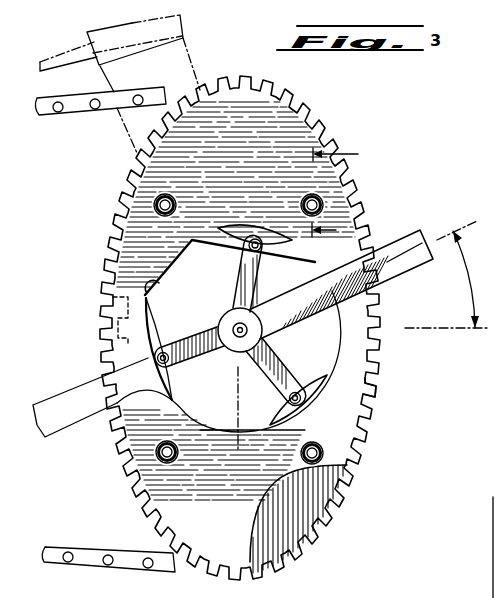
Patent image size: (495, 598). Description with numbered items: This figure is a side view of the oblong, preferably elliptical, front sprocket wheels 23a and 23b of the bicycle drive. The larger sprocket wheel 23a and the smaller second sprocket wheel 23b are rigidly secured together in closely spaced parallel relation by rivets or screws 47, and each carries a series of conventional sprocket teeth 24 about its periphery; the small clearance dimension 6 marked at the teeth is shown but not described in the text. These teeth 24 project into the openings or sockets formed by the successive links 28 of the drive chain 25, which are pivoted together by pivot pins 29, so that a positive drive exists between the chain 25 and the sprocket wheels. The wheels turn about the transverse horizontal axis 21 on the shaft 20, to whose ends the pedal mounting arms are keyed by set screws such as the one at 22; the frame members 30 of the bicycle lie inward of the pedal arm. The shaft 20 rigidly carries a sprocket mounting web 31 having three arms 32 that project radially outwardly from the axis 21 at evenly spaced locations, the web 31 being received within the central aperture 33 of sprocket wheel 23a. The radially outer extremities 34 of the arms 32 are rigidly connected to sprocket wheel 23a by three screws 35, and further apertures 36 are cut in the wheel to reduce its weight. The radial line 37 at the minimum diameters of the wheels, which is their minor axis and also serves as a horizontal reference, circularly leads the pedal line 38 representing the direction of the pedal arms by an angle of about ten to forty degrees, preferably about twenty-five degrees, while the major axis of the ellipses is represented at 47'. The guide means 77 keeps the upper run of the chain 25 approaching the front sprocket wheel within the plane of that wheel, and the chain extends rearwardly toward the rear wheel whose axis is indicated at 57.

The clearance dimension 6 is at (342, 196).
The shaft 20 is at (229, 329).
The transverse horizontal axis 21 is at (234, 312).
The set screw 22 is at (220, 329).
The oblong sprocket wheel 23a is at (372, 376).
The second sprocket wheel 23b is at (272, 543).
The sprocket teeth 24 is at (112, 277).
The drive chain 25 is at (34, 118).
The links 28 is at (84, 112).
The pivot pins 29 is at (59, 114).
The frame members 30 is at (176, 72).
The sprocket mounting web 31 is at (282, 372).
The arms 32 is at (246, 265).
The central aperture 33 is at (147, 296).
The radially outer extremities 34 is at (330, 380).
The screws 35 is at (160, 357).
The apertures 36 is at (117, 403).
The radial line at minimum diameters 37 is at (462, 334).
The pedal line 38 is at (465, 223).
The rivets or screws 47 is at (248, 337).
The major axis 47' is at (217, 408).
The axis of rear wheel 57 is at (483, 590).
The guide means 77 is at (186, 35).